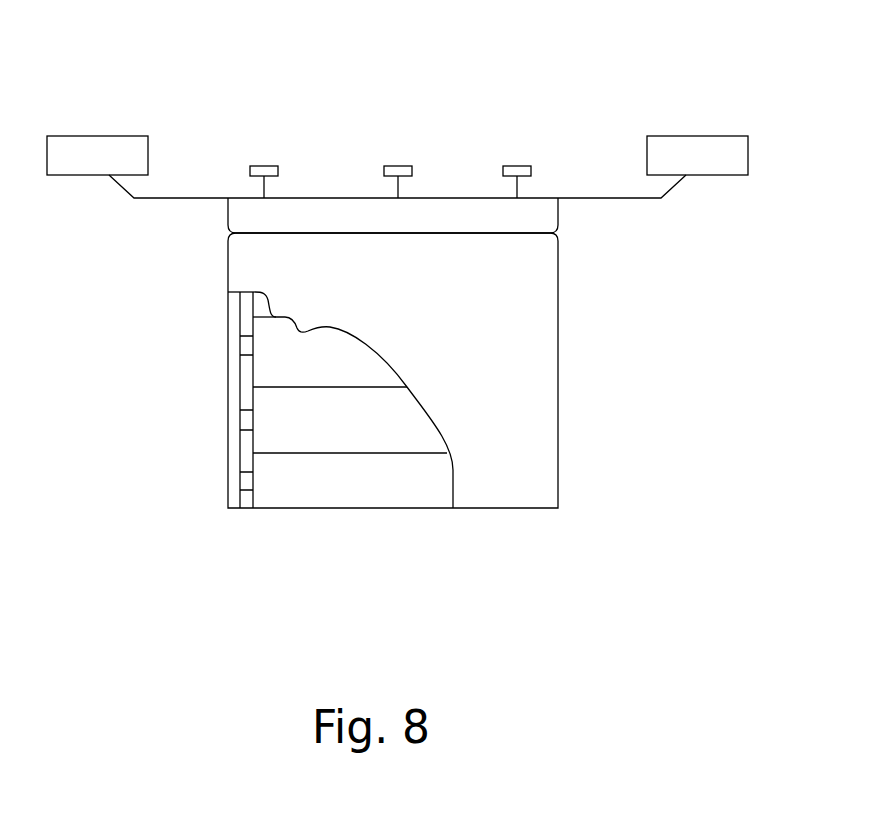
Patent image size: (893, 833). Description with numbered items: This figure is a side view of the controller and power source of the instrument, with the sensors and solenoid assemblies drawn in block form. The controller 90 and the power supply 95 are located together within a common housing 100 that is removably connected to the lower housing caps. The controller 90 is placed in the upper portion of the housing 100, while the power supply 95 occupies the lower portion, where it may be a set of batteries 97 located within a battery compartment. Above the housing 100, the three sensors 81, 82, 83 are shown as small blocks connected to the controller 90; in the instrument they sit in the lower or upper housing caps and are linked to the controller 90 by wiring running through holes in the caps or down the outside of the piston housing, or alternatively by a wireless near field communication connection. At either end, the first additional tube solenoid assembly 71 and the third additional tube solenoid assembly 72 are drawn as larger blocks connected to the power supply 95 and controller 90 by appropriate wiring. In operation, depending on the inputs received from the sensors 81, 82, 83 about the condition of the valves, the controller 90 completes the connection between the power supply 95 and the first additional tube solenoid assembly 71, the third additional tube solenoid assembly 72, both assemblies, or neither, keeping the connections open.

The first additional tube solenoid assembly 71 is at (98, 136).
The third additional tube solenoid assembly 72 is at (698, 136).
The sensor 81 is at (264, 166).
The sensor 82 is at (398, 166).
The sensor 83 is at (517, 166).
The controller 90 is at (540, 222).
The power supply 95 is at (542, 380).
The batteries 97 is at (342, 495).
The housing 100 is at (145, 452).